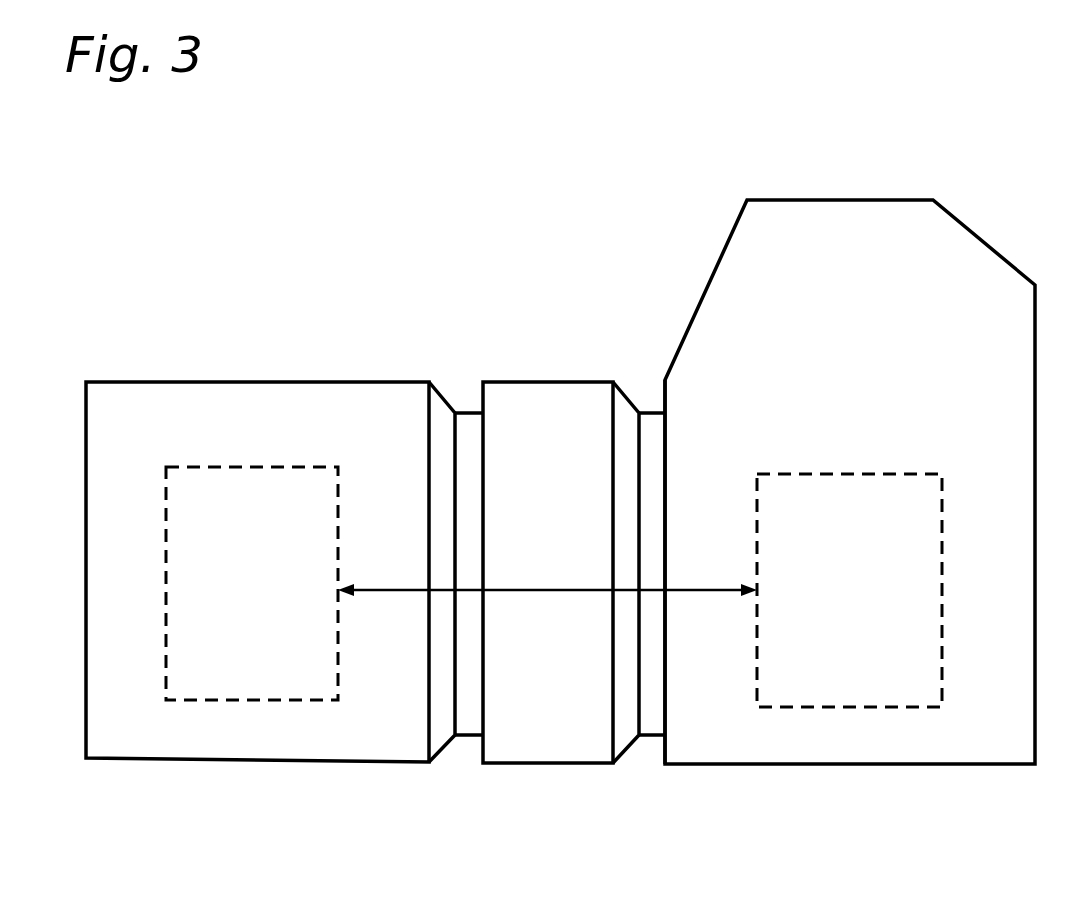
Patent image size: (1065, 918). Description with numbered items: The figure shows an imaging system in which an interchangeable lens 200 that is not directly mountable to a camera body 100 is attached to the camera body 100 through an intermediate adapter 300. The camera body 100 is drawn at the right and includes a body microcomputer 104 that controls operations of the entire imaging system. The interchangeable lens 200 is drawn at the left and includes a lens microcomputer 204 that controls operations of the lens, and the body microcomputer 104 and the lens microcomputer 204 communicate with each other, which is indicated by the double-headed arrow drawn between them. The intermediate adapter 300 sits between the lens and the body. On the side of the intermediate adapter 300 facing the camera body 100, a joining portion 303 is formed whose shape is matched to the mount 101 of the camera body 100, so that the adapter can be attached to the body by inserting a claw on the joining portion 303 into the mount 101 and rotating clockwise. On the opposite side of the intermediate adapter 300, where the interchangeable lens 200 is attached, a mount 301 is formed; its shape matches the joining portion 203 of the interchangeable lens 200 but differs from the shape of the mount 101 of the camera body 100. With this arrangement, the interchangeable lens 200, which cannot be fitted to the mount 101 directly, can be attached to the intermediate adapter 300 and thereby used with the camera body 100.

The camera body 100 is at (997, 253).
The mount 101 is at (652, 445).
The body microcomputer 104 is at (862, 707).
The interchangeable lens 200 is at (208, 382).
The joining portion 203 is at (443, 442).
The lens microcomputer 204 is at (215, 700).
The intermediate adapter 300 is at (562, 383).
The mount 301 is at (470, 442).
The joining portion 303 is at (628, 428).